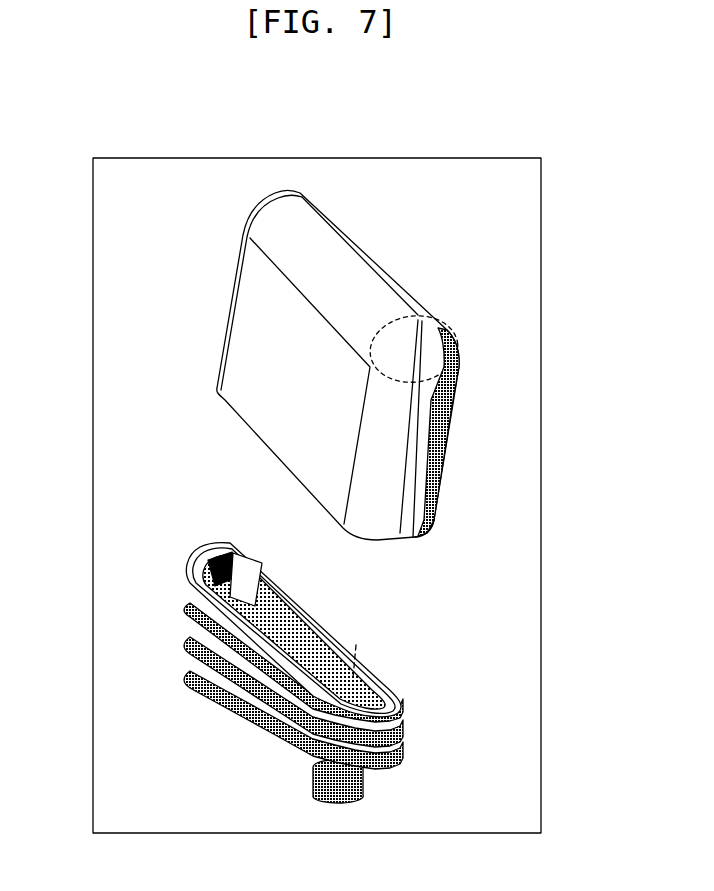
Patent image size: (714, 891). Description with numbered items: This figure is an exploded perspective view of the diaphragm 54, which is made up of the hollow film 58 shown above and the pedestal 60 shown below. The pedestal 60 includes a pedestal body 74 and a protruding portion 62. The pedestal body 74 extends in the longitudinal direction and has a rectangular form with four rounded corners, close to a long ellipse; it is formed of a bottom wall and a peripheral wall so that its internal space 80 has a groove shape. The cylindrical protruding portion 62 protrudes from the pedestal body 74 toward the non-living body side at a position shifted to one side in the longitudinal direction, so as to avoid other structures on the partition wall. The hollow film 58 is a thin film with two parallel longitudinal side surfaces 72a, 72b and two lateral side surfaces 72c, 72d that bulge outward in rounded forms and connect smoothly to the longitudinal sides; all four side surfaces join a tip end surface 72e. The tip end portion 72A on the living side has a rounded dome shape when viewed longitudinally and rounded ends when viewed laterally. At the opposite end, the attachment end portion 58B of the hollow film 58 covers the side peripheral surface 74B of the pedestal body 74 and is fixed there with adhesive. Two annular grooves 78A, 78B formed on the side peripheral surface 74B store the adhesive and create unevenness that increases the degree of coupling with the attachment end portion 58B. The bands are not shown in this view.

The diaphragm 54 is at (175, 296).
The hollow film 58 is at (450, 408).
The attachment end portion 58B is at (437, 512).
The pedestal 60 is at (245, 715).
The protruding portion 62 is at (312, 776).
The tip end portion 72A is at (367, 257).
The longitudinal side surface 72a is at (263, 397).
The longitudinal side surface 72b is at (463, 367).
The lateral side surface 72c is at (437, 452).
The lateral side surface 72d is at (235, 263).
The tip end surface 72e is at (307, 217).
The pedestal body 74 is at (208, 548).
The side peripheral surface 74B is at (225, 625).
The annular groove 78A is at (407, 717).
The annular groove 78B is at (403, 742).
The internal space 80 is at (355, 638).